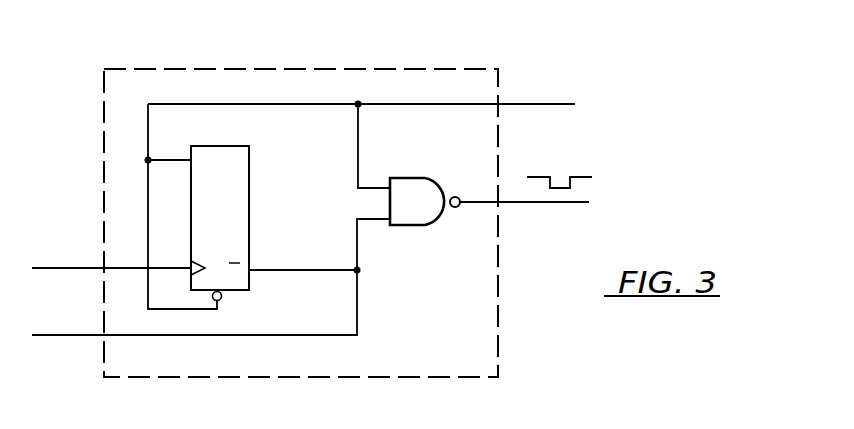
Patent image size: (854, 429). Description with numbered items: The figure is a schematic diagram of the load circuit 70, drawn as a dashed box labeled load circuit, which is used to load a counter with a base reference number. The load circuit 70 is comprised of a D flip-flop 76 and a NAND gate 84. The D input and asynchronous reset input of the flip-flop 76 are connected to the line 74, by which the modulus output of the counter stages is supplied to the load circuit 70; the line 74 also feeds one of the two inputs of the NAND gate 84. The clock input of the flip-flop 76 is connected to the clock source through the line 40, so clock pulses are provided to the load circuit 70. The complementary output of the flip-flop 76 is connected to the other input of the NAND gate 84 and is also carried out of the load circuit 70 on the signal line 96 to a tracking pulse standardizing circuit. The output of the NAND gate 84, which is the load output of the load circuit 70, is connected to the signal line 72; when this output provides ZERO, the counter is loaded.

The load circuit 70 is at (488, 70).
The signal line 74 is at (547, 107).
The D flip-flop 76 is at (249, 177).
The NAND gate 84 is at (422, 177).
The signal line 72 is at (553, 203).
The line 40 is at (76, 267).
The signal line 96 is at (76, 335).